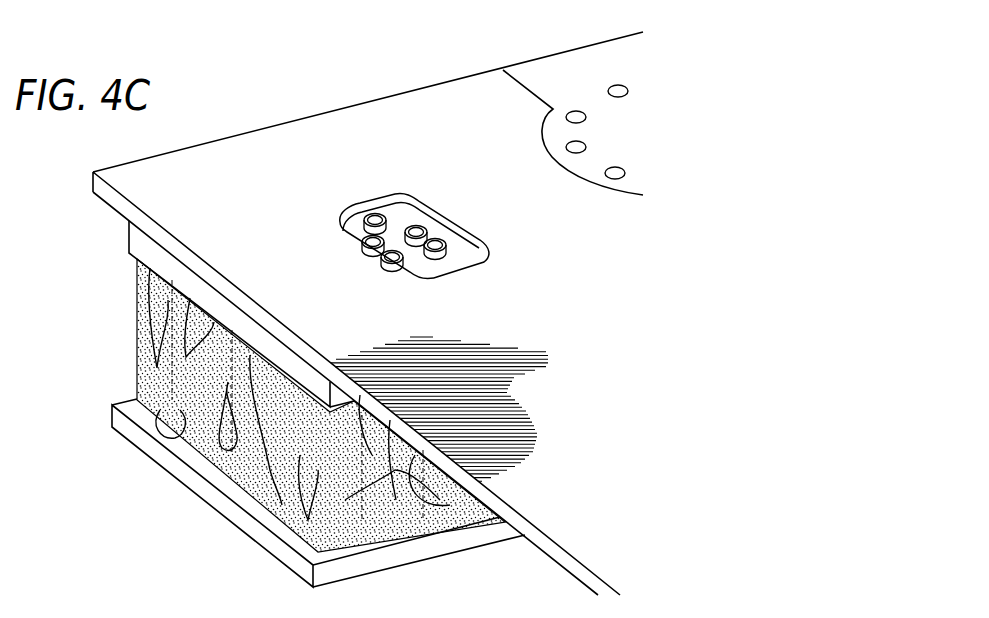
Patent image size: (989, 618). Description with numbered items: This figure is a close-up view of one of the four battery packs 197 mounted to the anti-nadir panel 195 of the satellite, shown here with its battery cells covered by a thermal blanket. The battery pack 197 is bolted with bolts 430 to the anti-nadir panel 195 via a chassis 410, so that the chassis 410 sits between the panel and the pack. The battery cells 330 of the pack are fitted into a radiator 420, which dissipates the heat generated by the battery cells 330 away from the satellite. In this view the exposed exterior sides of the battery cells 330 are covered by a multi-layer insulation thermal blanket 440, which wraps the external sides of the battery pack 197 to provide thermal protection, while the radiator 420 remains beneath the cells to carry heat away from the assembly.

The anti-nadir panel 195 is at (341, 84).
The bolts 430 is at (418, 226).
The chassis 410 is at (137, 236).
The battery pack 197 is at (274, 400).
The multi-layer insulation (MLI) thermal blanket 440 is at (137, 386).
The battery cells 330 is at (443, 513).
The radiator 420 is at (98, 457).